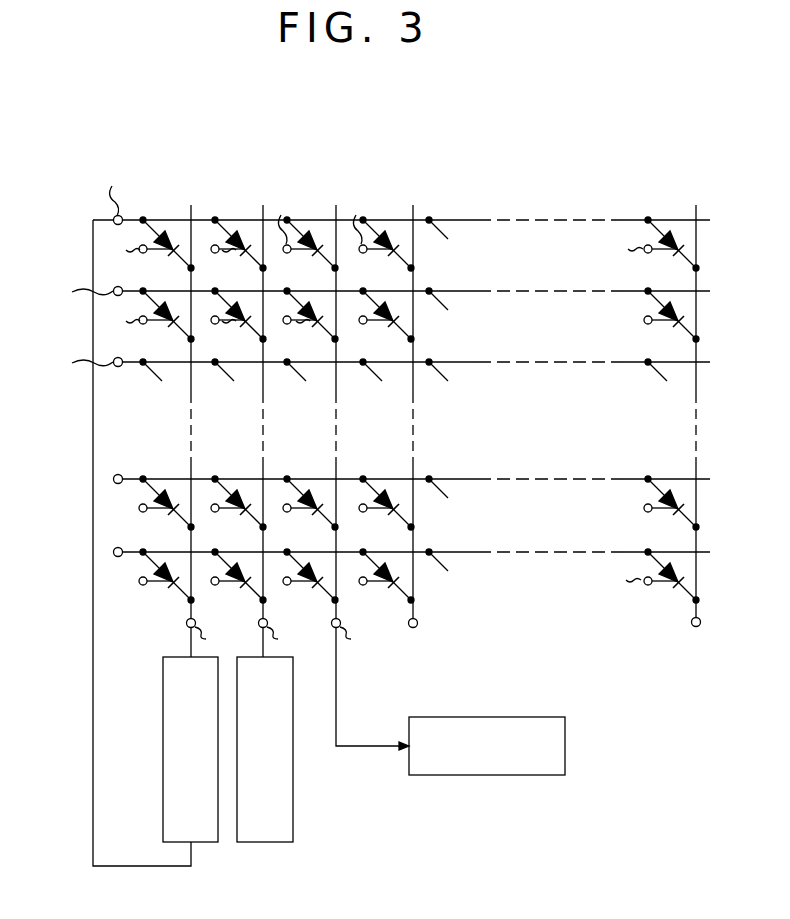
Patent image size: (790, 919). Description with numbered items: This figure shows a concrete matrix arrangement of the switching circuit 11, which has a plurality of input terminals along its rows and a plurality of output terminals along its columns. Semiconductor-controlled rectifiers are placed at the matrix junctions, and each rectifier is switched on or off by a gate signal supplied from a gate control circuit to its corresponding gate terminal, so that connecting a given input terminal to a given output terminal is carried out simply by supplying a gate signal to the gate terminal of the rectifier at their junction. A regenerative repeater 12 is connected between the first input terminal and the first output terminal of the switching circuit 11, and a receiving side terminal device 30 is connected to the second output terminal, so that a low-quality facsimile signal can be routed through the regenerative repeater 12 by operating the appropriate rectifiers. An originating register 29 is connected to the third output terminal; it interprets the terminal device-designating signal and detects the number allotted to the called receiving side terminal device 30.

The switching circuit 11 is at (528, 433).
The regenerative repeater 12 is at (163, 806).
The originating register 29 is at (546, 717).
The receiving side terminal device 30 is at (294, 808).